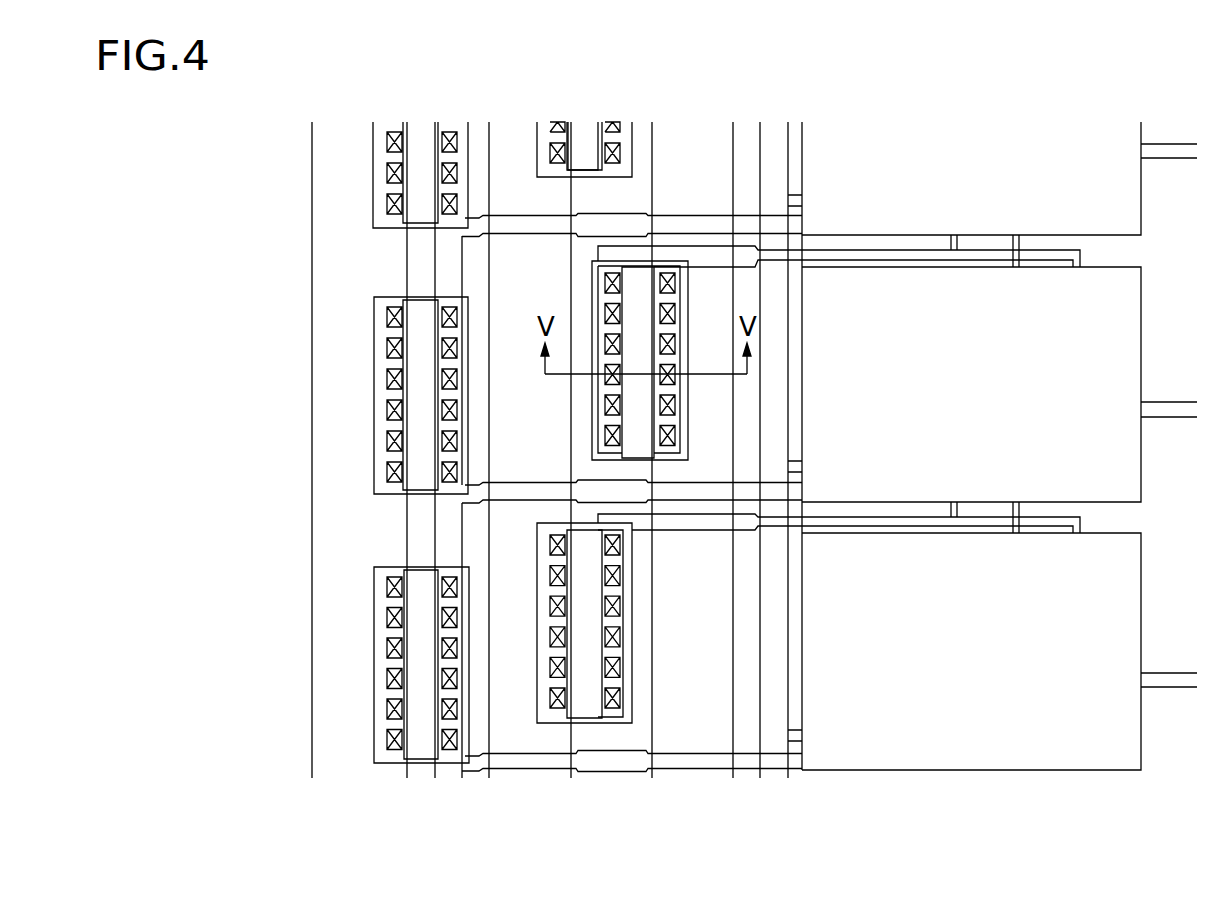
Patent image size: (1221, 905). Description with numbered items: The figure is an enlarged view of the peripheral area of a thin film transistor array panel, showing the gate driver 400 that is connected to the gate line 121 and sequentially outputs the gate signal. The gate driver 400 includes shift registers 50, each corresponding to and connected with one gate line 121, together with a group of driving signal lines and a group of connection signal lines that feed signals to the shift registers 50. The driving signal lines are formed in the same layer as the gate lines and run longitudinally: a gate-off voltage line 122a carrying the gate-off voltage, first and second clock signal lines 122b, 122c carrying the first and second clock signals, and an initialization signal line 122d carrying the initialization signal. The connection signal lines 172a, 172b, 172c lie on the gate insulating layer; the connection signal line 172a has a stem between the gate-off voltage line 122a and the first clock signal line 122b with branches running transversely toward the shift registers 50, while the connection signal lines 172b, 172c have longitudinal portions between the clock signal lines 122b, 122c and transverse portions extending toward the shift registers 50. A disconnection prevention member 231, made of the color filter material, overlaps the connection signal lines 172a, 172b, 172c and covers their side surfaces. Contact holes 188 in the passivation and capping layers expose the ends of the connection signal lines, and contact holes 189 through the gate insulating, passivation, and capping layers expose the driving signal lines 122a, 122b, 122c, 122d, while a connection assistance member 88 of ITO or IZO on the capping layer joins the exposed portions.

The gate driver 400 is at (875, 64).
The gate line 121 is at (1168, 144).
The gate-off voltage line 122a is at (410, 113).
The first clock signal line 122b is at (571, 113).
The second clock signal line 122c is at (733, 113).
The initialization signal line 122d is at (788, 113).
The connection signal line 172a is at (463, 150).
The connection signal line 172b is at (612, 718).
The connection signal line 172c is at (634, 246).
The contact hole 188 is at (607, 385).
The contact hole 189 is at (672, 382).
The disconnection prevention member 231 is at (638, 458).
The connection assistance member 88 is at (420, 764).
The shift register 50 is at (972, 754).